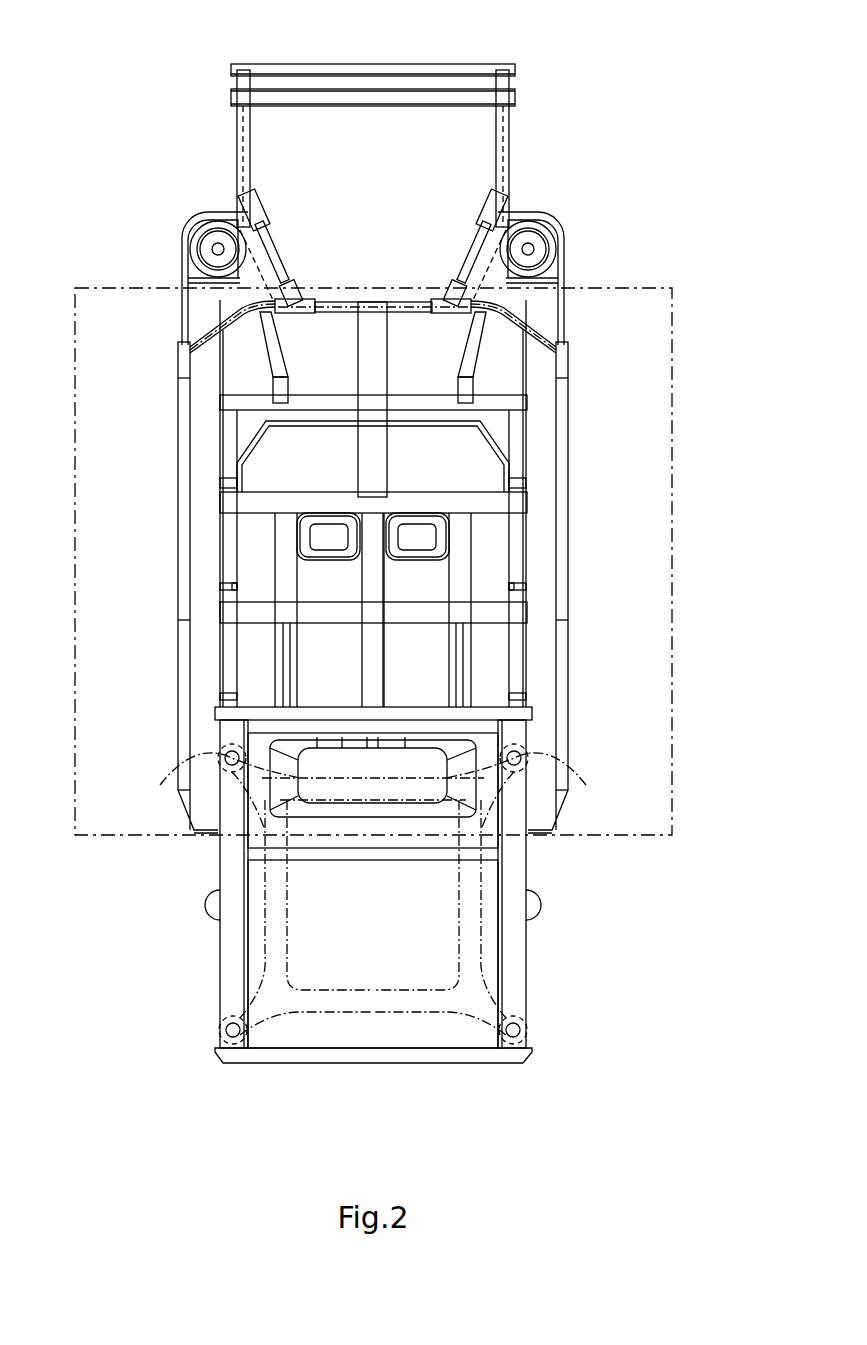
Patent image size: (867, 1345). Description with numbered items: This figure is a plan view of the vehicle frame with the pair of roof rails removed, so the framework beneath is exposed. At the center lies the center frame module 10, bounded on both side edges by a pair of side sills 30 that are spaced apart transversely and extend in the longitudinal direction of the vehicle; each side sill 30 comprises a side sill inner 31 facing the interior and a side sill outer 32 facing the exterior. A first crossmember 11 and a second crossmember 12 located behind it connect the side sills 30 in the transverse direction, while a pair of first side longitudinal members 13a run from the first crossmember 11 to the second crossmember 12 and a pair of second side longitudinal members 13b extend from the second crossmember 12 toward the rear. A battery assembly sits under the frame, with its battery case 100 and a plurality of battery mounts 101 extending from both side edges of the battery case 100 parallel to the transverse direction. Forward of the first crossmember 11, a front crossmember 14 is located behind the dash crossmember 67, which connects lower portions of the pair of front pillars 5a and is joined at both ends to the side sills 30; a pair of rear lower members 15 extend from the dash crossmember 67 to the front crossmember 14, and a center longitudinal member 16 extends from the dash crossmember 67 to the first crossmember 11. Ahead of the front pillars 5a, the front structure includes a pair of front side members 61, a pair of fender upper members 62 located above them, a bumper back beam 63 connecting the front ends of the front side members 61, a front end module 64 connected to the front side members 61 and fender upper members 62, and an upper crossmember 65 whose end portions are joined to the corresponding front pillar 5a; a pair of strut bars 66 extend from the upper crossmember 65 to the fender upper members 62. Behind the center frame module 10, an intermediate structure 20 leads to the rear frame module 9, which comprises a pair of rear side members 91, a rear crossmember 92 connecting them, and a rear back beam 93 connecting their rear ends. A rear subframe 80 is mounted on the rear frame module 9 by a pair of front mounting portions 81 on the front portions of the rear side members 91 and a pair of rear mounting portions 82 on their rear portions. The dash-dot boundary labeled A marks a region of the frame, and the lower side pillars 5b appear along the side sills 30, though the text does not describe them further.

The detail region A is at (681, 562).
The rear frame module 9 is at (214, 953).
The center frame module 10 is at (156, 598).
The first crossmember 11 is at (498, 503).
The second crossmember 12 is at (511, 610).
The first side longitudinal member 13a is at (290, 553).
The second side longitudinal member 13b is at (275, 660).
The front crossmember 14 is at (416, 400).
The rear lower member 15 is at (266, 340).
The center longitudinal member 16 is at (388, 342).
The intermediate structure 20 is at (395, 701).
The side sill 30 is at (176, 430).
The side sill inner 31 is at (197, 527).
The side sill outer 32 is at (186, 502).
The front pillar 5a is at (178, 357).
The lower side pillar 5b is at (178, 617).
The front side member 61 is at (237, 152).
The fender upper member 62 is at (178, 248).
The bumper back beam 63 is at (372, 70).
The front end module 64 is at (378, 120).
The upper crossmember 65 is at (333, 315).
The strut bar 66 is at (274, 262).
The dash crossmember 67 is at (373, 300).
The rear subframe 80 is at (483, 918).
The front mounting portion 81 is at (226, 760).
The rear mounting portion 82 is at (228, 1030).
The rear side member 91 is at (236, 873).
The rear crossmember 92 is at (375, 856).
The rear back beam 93 is at (375, 1064).
The battery case 100 is at (255, 640).
The battery mount 101 is at (227, 482).